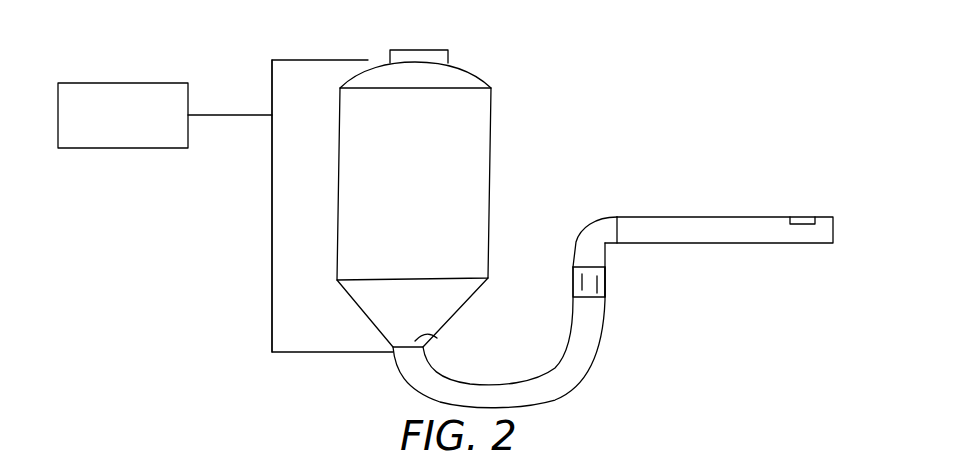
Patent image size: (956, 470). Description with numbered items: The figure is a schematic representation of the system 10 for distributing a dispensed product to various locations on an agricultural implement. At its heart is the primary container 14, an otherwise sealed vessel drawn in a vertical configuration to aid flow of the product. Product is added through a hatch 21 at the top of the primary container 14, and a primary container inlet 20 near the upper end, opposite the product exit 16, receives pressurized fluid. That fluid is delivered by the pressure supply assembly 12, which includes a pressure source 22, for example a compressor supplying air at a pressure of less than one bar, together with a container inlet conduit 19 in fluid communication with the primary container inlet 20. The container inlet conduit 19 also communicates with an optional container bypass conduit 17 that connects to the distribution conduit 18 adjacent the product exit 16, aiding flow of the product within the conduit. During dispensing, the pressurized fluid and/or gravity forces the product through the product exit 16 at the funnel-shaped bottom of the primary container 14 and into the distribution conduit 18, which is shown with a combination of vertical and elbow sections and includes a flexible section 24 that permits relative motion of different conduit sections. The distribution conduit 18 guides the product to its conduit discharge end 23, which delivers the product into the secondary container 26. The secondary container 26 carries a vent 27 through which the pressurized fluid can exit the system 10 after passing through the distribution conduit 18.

The system 10 is at (568, 78).
The pressure supply assembly 12 is at (170, 216).
The primary container 14 is at (496, 178).
The product exit 16 is at (437, 338).
The container bypass conduit 17 is at (272, 270).
The distribution conduit 18 is at (624, 296).
The container inlet conduit 19 is at (312, 60).
The primary container inlet 20 is at (365, 67).
The hatch 21 is at (434, 50).
The pressure source 22 is at (123, 148).
The conduit discharge end 23 is at (620, 212).
The flexible section 24 is at (573, 283).
The secondary container 26 is at (645, 217).
The vent 27 is at (795, 217).